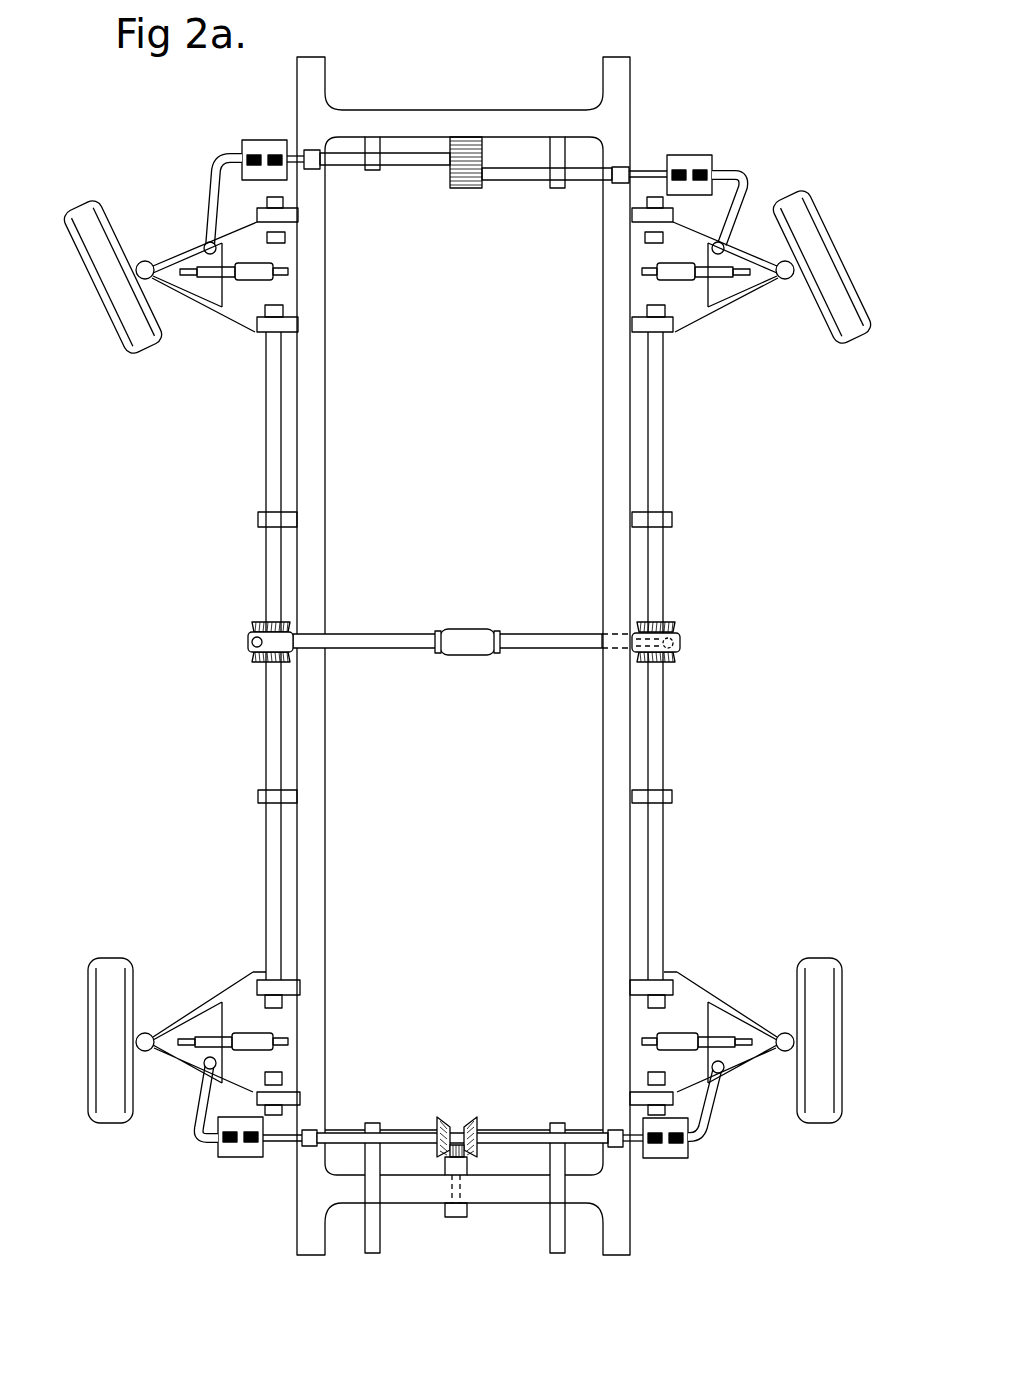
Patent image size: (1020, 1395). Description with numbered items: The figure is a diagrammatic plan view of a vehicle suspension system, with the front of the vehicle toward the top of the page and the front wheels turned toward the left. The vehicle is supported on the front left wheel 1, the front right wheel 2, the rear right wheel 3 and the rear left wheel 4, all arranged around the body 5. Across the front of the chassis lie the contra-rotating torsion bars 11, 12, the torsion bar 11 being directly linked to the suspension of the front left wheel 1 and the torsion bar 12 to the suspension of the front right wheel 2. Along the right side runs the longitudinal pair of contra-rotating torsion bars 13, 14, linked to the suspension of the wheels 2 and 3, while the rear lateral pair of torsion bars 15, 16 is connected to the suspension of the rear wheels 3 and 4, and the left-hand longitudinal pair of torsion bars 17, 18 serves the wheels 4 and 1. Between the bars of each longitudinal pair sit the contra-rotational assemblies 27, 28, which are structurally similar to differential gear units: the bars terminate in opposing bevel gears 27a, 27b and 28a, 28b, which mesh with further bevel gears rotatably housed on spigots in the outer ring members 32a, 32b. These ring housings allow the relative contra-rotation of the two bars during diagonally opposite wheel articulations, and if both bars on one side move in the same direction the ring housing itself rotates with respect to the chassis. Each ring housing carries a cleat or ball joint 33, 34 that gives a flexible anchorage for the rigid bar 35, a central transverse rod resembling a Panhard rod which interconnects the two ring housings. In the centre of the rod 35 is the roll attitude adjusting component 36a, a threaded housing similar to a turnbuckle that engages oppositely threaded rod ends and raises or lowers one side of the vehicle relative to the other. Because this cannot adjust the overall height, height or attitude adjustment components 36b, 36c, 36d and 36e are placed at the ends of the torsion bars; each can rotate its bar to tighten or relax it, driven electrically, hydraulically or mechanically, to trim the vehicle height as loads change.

The front left wheel 1 is at (92, 212).
The front right wheel 2 is at (800, 215).
The rear right wheel 3 is at (820, 966).
The rear left wheel 4 is at (107, 966).
The body 5 is at (330, 462).
The torsion bar 11 is at (350, 166).
The torsion bar 12 is at (520, 183).
The torsion bar 13 is at (668, 497).
The torsion bar 14 is at (668, 760).
The torsion bar 15 is at (510, 1133).
The torsion bar 16 is at (366, 1123).
The torsion bar 17 is at (288, 848).
The torsion bar 18 is at (265, 550).
The contra-rotational assembly 27 is at (734, 613).
The bevel gear 27a is at (675, 622).
The bevel gear 27b is at (676, 665).
The contra-rotational assembly 28 is at (185, 620).
The bevel gear 28a is at (260, 622).
The bevel gear 28b is at (253, 663).
The outer ring member 32a is at (248, 649).
The outer ring member 32b is at (683, 650).
The cleat or ball joint 33 is at (248, 637).
The cleat or ball joint 34 is at (682, 638).
The rigid bar 35 is at (375, 633).
The roll attitude adjusting component 36a is at (470, 630).
The height or attitude adjustment component 36b is at (690, 158).
The height or attitude adjustment component 36c is at (670, 1160).
The height or attitude adjustment component 36d is at (236, 1158).
The height or attitude adjustment component 36e is at (262, 147).